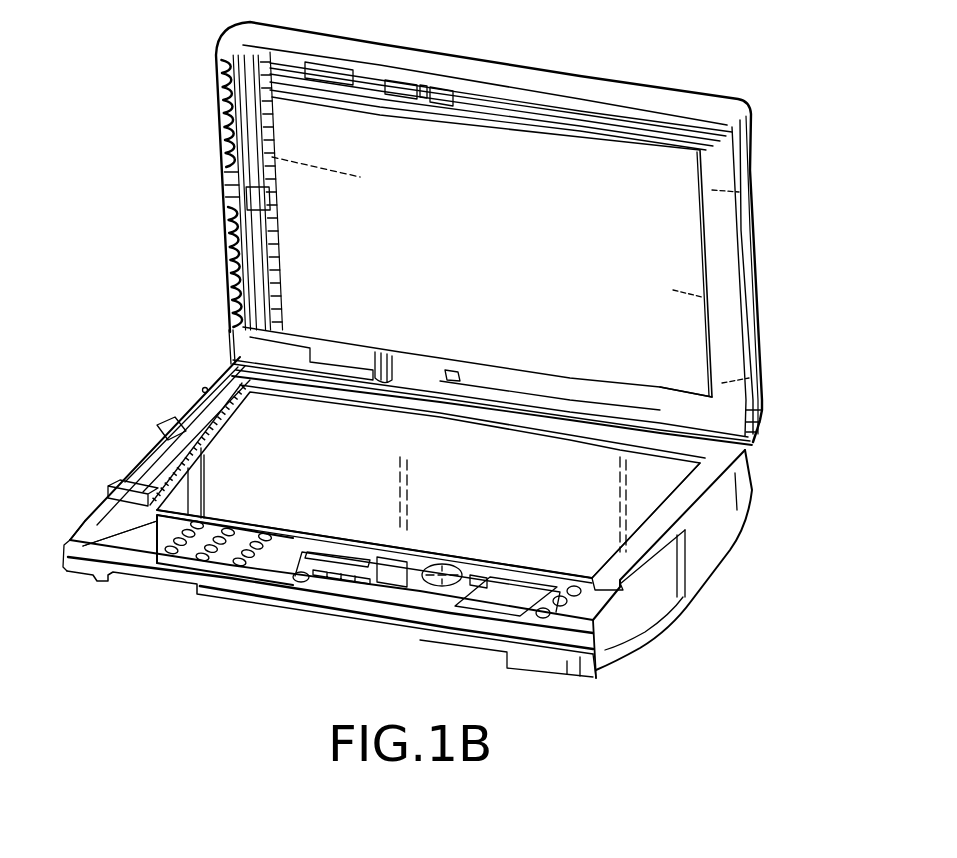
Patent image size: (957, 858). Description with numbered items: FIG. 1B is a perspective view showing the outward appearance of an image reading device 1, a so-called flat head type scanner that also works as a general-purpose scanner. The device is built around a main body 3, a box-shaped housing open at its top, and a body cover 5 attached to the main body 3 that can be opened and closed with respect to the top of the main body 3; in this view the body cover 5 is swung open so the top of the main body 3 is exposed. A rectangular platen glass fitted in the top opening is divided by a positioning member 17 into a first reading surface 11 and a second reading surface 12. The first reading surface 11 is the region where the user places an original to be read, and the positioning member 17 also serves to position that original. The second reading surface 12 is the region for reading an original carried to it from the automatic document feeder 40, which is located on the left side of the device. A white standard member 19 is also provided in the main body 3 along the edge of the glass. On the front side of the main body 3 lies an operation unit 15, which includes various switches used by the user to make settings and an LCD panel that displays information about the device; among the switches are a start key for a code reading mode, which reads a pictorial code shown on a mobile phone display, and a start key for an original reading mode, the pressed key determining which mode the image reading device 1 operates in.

The image reading device 1 is at (466, 350).
The main body 3 is at (411, 517).
The body cover 5 is at (469, 233).
The first reading surface 11 is at (317, 503).
The second reading surface 12 is at (167, 462).
The operation unit 15 is at (377, 587).
The positioning member 17 is at (173, 485).
The white standard member 19 is at (210, 433).
The automatic document feeder 40 is at (233, 173).